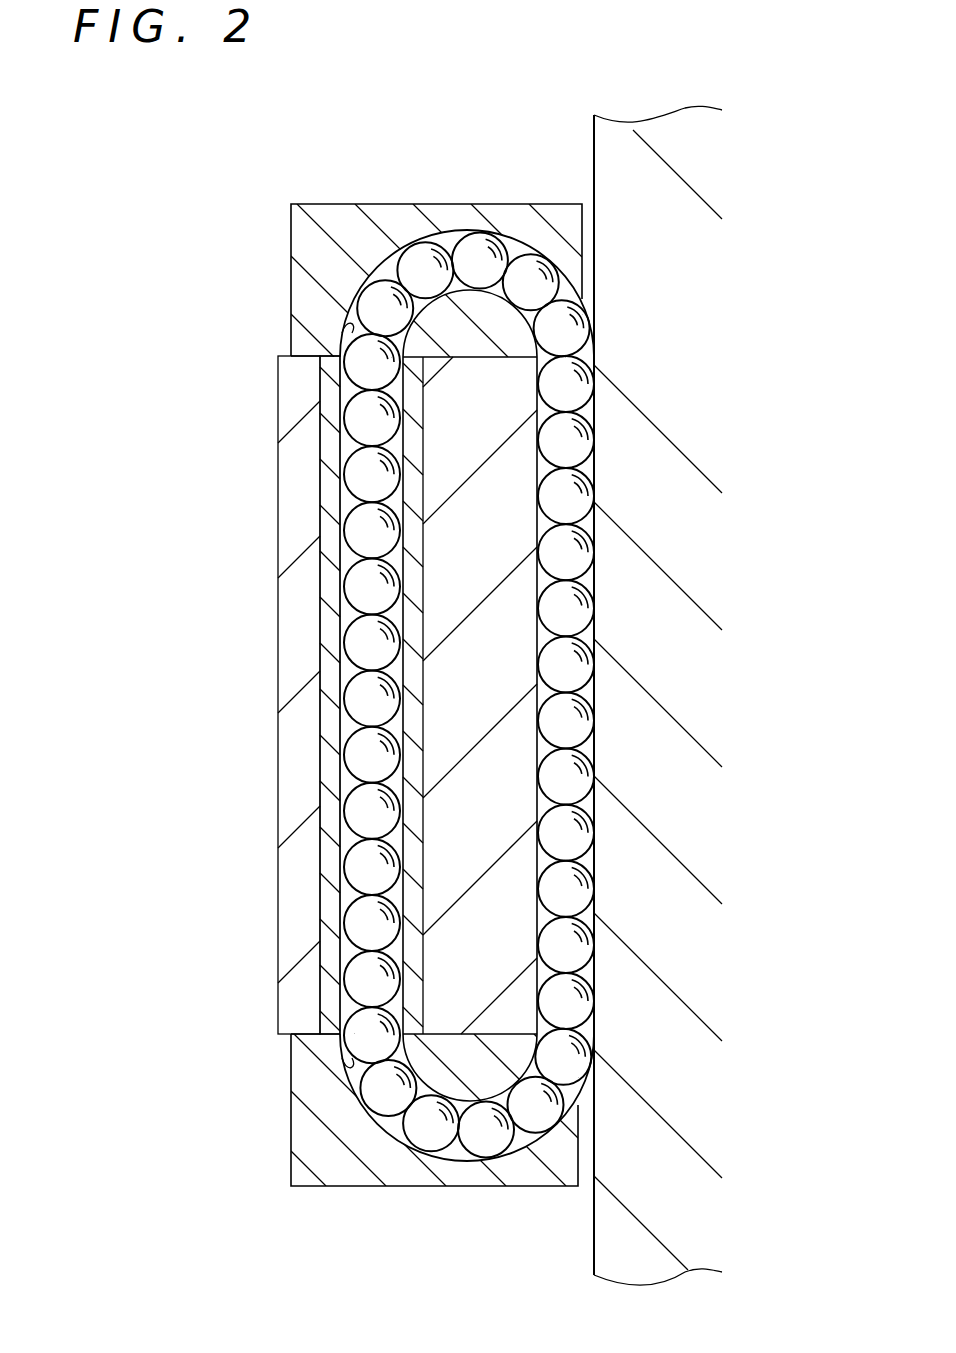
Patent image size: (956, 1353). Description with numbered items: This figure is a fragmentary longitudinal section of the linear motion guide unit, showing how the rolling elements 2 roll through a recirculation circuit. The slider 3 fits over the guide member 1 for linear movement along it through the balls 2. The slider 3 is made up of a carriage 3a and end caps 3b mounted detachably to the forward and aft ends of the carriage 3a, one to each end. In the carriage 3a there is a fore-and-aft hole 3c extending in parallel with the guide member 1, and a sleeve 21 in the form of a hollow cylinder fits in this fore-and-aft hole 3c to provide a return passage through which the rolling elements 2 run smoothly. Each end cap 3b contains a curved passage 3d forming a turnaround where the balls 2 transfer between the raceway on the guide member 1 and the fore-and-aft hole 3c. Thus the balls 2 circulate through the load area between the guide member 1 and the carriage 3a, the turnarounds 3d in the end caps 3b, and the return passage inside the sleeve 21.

The guide member 1 is at (632, 187).
The rolling element 2 is at (423, 262).
The slider 3 is at (313, 697).
The carriage 3a is at (297, 732).
The end cap 3b is at (312, 241).
The fore-and-aft hole 3c is at (323, 595).
The curved passage 3d is at (322, 346).
The sleeve 21 is at (330, 855).